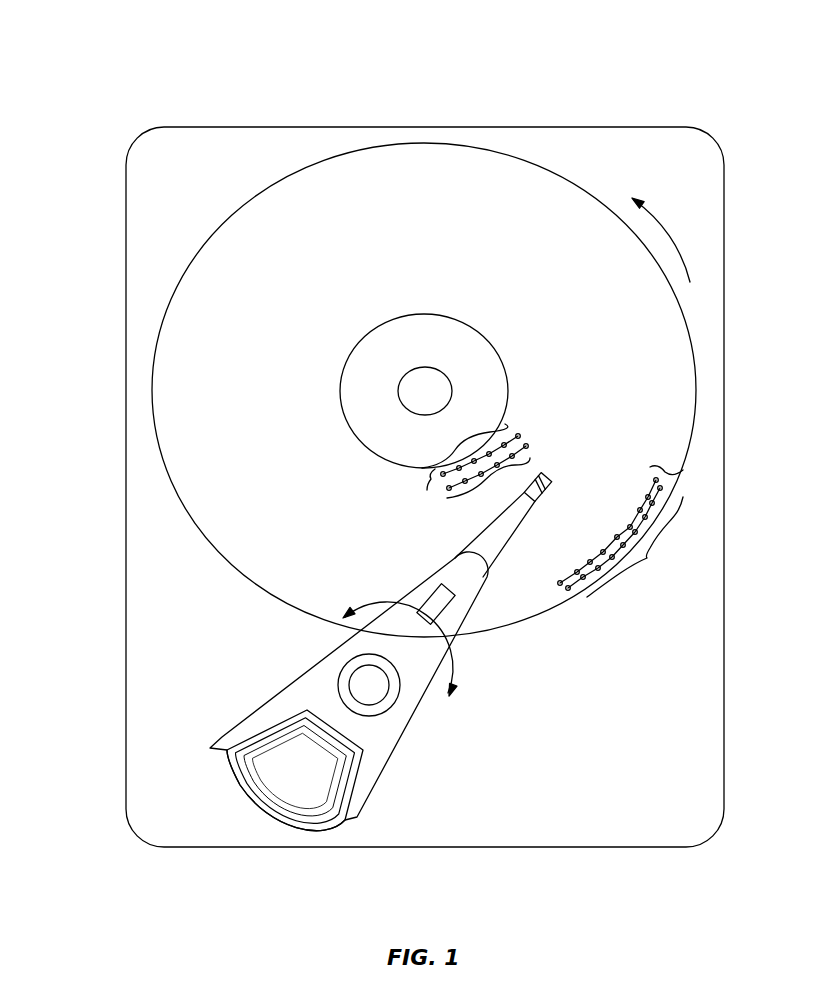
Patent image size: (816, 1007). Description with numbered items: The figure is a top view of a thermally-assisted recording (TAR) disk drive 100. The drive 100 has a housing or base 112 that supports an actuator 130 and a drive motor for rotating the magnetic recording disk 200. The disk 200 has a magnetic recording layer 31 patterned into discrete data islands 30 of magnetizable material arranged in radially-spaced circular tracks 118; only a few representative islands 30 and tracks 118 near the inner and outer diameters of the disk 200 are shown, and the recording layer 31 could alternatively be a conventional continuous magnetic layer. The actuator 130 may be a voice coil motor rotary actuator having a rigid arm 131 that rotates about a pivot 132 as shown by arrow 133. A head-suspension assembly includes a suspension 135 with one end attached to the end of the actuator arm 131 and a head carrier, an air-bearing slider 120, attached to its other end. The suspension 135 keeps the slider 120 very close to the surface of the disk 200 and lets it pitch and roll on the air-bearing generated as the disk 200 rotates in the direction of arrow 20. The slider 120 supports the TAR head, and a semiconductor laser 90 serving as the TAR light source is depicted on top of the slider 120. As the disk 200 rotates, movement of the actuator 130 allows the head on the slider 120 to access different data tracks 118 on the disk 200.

The thermally-assisted recording disk drive 100 is at (126, 52).
The housing or base 112 is at (650, 128).
The disk 200 is at (282, 172).
The arrow indicating disk rotation direction 20 is at (664, 226).
The magnetic recording layer 31 is at (673, 357).
The circular tracks 118 is at (427, 481).
The data islands 30 is at (536, 479).
The semiconductor laser 90 is at (546, 486).
The air-bearing slider 120 is at (547, 493).
The suspension 135 is at (470, 548).
The rigid arm 131 is at (412, 596).
The pivot 132 is at (362, 683).
The arrow indicating actuator rotation 133 is at (445, 670).
The actuator 130 is at (210, 748).